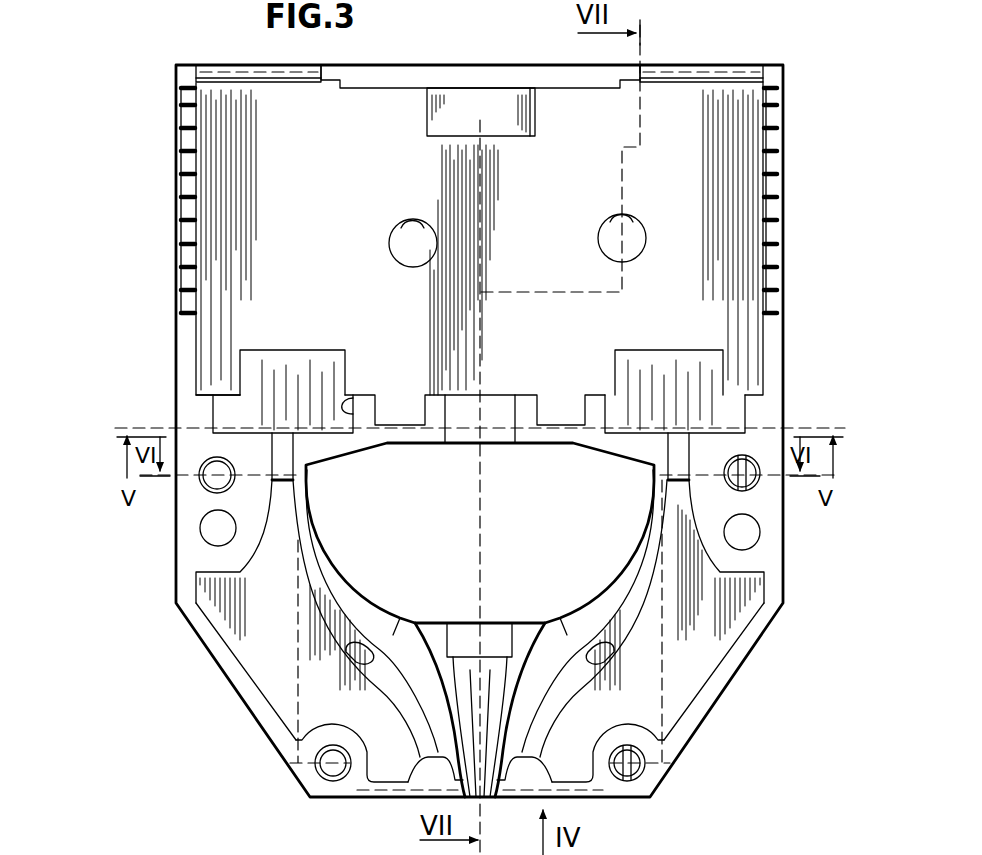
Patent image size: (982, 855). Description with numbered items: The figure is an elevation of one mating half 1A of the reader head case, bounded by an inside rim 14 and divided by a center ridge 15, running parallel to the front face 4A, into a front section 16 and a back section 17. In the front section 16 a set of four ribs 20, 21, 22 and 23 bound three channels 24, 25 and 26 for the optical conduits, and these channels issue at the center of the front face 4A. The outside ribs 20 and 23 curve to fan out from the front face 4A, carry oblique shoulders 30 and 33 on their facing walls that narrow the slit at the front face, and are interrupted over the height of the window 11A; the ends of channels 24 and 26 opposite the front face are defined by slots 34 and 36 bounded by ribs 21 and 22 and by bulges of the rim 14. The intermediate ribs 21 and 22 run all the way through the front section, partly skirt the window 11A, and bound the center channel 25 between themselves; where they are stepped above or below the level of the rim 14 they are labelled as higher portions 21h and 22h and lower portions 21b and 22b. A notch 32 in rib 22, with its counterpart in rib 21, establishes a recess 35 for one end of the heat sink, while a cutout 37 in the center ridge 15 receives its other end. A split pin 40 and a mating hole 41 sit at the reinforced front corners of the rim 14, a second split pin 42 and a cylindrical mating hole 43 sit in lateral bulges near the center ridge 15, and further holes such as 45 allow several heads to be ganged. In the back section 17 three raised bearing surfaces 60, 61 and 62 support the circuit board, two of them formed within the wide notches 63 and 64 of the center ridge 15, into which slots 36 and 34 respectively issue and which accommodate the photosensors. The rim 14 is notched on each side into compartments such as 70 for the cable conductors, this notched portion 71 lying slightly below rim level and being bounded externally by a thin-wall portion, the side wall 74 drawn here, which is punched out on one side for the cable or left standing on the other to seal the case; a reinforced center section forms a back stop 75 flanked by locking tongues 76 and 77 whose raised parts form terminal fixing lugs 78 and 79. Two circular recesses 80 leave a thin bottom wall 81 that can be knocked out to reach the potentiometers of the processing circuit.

The mating half 1A is at (508, 60).
The front face 4A is at (372, 805).
The window 11A is at (605, 523).
The rim 14 is at (773, 360).
The ridge 15 is at (563, 440).
The front section 16 is at (647, 618).
The back section 17 is at (278, 238).
The rib 20 is at (604, 648).
The rib 21 is at (597, 600).
The rib portion lower than rim 21b is at (524, 735).
The rib portion higher than rim 21h is at (520, 700).
The rib 22 is at (330, 565).
The rib portion lower than rim 22b is at (436, 735).
The rib portion higher than rim 22h is at (440, 700).
The rib 23 is at (355, 645).
The channel 24 is at (575, 676).
The center channel 25 is at (470, 660).
The channel 26 is at (398, 675).
The oblique shoulder 30 is at (553, 765).
The notch 32 is at (360, 676).
The oblique shoulder 33 is at (410, 788).
The slot 34 is at (692, 497).
The recess 35 is at (496, 625).
The slot 36 is at (284, 455).
The cutout 37 is at (468, 418).
The split pin 40 is at (640, 775).
The mating hole 41 is at (320, 775).
The split pin 42 is at (745, 470).
The cylindrical mating hole 43 is at (215, 473).
The hole 45 is at (748, 538).
The bearing surface 60 is at (500, 120).
The bearing surface 61 is at (300, 356).
The bearing surface 62 is at (700, 358).
The notch 63 is at (340, 395).
The notch 64 is at (612, 405).
The compartment 70 is at (190, 210).
The notched portion 71 is at (200, 163).
The side wall 74 is at (190, 183).
The back stop 75 is at (356, 88).
The locking tongue 76 is at (240, 63).
The locking tongue 77 is at (700, 88).
The terminal fixing lug 78 is at (262, 80).
The terminal fixing lug 79 is at (718, 72).
The circular recess 80 is at (410, 222).
The thin bottom wall 81 is at (412, 243).